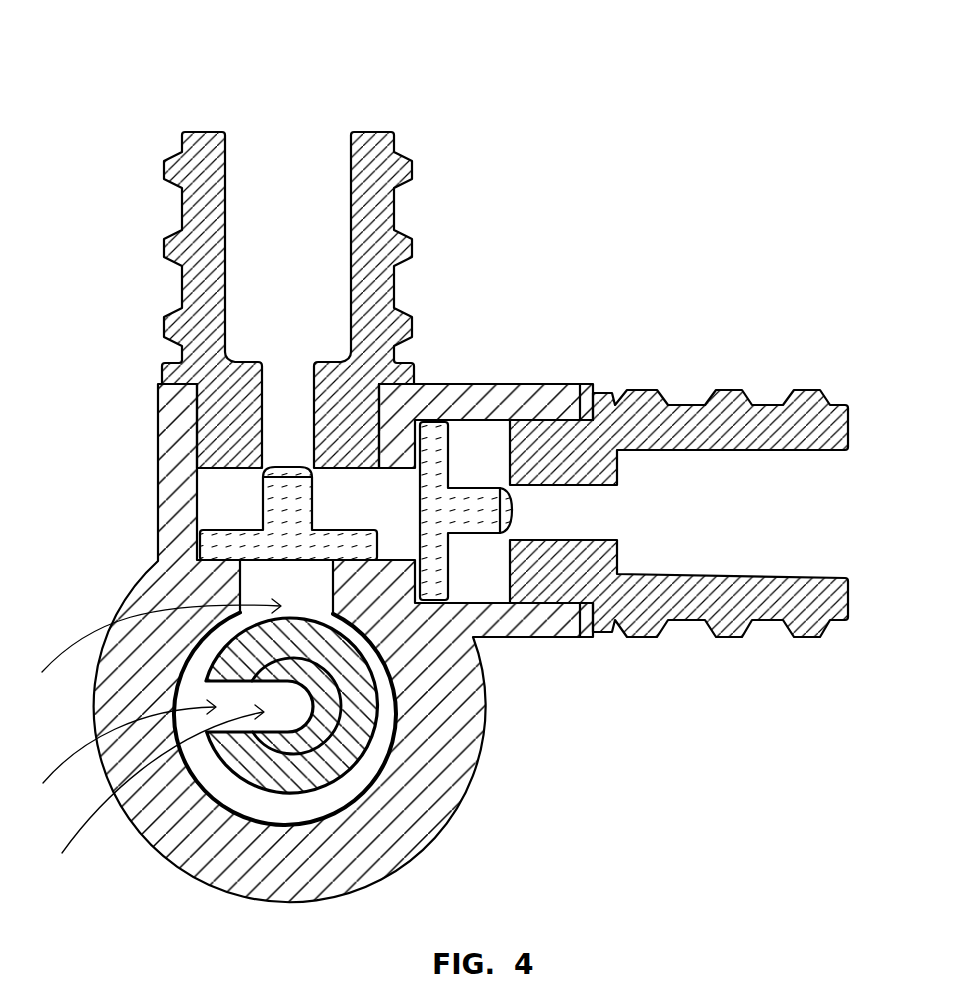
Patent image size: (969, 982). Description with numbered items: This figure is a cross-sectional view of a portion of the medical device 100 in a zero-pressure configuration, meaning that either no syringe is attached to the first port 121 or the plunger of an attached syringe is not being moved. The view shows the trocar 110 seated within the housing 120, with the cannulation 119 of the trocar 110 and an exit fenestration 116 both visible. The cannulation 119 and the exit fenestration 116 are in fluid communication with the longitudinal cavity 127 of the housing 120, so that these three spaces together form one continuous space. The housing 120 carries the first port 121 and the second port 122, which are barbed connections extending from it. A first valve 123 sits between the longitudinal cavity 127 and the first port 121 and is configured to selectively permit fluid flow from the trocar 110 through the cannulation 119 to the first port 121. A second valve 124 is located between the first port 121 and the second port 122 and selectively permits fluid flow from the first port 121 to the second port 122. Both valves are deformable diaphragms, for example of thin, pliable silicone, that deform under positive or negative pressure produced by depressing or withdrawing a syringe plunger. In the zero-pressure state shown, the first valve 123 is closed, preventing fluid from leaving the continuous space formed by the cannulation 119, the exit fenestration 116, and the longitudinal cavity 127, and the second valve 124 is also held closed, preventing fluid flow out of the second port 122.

The medical device 100 is at (270, 45).
The trocar 110 is at (270, 793).
The exit fenestration 116 is at (125, 758).
The cannulation 119 is at (154, 795).
The housing 120 is at (482, 713).
The first port 121 is at (410, 178).
The second port 122 is at (827, 397).
The first valve 123 is at (313, 507).
The second valve 124 is at (512, 510).
The longitudinal cavity 127 is at (157, 652).